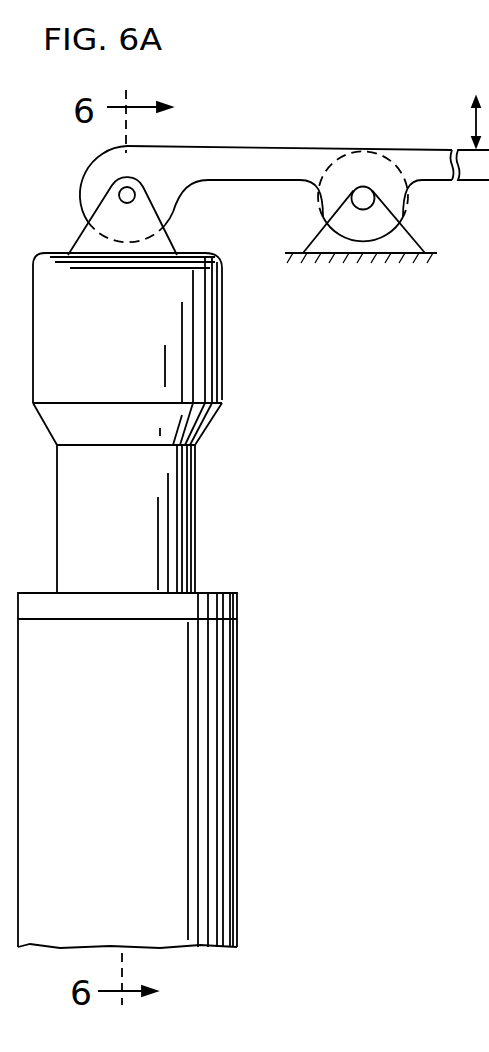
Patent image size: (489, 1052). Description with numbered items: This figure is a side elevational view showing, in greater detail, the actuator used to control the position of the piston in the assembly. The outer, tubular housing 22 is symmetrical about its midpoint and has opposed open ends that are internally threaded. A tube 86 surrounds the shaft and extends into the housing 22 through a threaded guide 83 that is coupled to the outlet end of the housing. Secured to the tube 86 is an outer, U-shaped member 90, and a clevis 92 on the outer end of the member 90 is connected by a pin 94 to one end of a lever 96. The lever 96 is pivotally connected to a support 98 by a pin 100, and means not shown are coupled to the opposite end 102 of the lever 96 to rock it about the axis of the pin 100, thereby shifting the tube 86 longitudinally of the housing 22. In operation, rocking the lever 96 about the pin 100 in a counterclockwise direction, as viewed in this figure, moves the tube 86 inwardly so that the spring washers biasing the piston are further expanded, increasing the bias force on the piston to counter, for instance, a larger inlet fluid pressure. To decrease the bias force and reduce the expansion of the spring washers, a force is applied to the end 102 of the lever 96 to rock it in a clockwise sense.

The housing 22 is at (250, 917).
The threaded guide 83 is at (488, 620).
The tube 86 is at (195, 505).
The U-shaped member 90 is at (222, 358).
The clevis 92 is at (167, 238).
The pin 94 is at (118, 194).
The lever 96 is at (289, 141).
The support 98 is at (316, 238).
The pin 100 is at (365, 195).
The opposite end of lever 102 is at (480, 172).